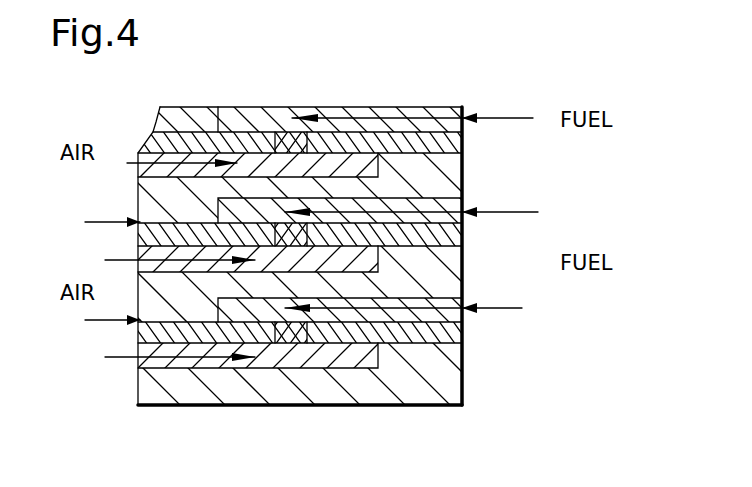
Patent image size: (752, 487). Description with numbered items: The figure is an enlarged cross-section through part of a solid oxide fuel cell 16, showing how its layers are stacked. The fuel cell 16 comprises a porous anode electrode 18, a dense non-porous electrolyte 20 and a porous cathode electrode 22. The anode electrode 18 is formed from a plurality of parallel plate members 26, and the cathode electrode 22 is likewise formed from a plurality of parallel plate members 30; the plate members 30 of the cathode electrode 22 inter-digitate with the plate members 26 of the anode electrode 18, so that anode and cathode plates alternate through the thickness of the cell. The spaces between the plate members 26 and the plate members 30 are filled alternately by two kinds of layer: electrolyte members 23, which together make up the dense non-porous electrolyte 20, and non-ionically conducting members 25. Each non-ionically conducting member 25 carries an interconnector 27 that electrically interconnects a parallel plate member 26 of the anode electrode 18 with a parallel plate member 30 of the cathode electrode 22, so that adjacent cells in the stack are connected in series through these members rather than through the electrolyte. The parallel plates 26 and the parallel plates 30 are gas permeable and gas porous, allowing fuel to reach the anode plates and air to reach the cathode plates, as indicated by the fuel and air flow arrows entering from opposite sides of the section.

The solid oxide fuel cell 16 is at (342, 210).
The anode electrode 18 is at (490, 337).
The electrolyte 20 is at (353, 440).
The cathode electrode 22 is at (138, 249).
The electrolyte member 23 is at (456, 281).
The non-ionically conducting member 25 is at (305, 284).
The parallel plate member 26 is at (410, 220).
The interconnector 27 is at (289, 264).
The parallel plate member 30 is at (230, 437).